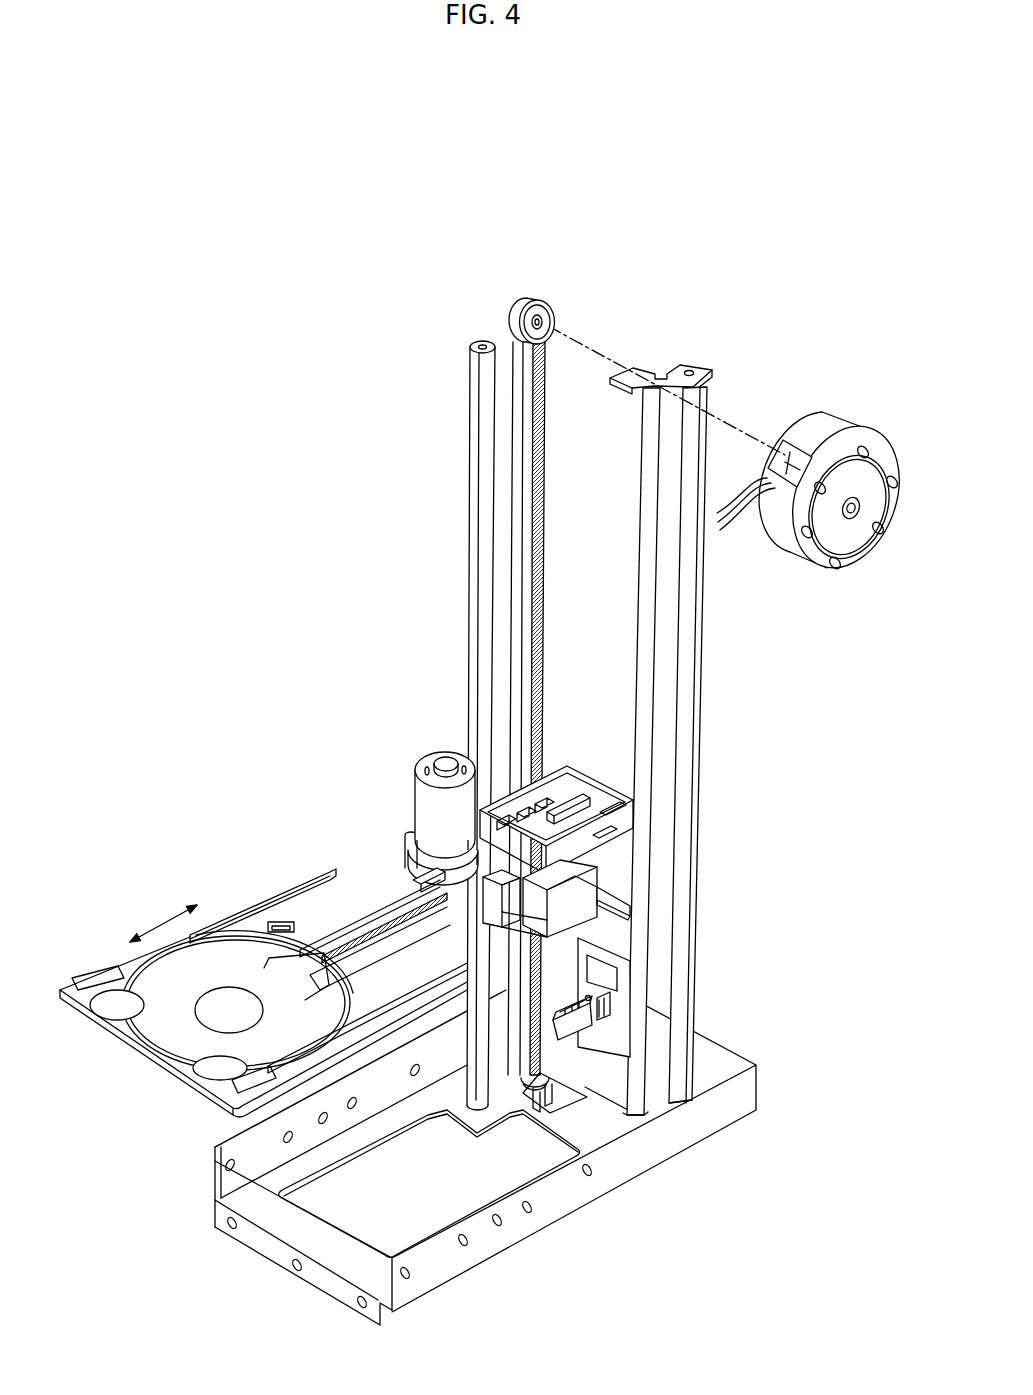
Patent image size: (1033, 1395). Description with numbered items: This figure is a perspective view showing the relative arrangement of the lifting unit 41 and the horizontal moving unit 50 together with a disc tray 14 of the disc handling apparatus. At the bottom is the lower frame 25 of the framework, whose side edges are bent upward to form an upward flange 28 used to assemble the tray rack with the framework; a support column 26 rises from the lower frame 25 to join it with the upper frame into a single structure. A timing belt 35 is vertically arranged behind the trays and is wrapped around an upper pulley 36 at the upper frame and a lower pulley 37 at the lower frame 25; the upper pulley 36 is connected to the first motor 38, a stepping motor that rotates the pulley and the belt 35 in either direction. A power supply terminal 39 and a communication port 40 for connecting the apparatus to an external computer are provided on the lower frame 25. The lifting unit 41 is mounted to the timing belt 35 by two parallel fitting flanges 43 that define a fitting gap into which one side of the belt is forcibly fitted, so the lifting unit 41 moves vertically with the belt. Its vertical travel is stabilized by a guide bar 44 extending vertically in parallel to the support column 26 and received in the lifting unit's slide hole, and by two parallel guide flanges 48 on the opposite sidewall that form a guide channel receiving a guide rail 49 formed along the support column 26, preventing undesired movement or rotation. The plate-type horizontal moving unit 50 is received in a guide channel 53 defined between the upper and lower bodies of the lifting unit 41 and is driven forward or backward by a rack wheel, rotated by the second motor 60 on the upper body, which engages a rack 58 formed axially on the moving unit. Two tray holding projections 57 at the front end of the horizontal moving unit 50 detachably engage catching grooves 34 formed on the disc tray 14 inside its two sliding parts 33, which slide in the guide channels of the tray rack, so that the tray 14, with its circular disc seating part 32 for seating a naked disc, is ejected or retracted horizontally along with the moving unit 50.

The disc tray 14 is at (143, 1060).
The lower frame 25 is at (352, 1278).
The support column 26 is at (690, 663).
The upward flange 28 is at (430, 1277).
The circular disc seating part 32 is at (153, 977).
The sliding part 33 is at (302, 882).
The catching groove 34 is at (280, 930).
The timing belt 35 is at (537, 442).
The upper pulley 36 is at (518, 303).
The lower pulley 37 is at (583, 1097).
The first motor 38 is at (817, 432).
The power supply terminal 39 is at (613, 997).
The communication port 40 is at (627, 1030).
The lifting unit 41 is at (577, 775).
The fitting flange 43 is at (507, 783).
The guide bar 44 is at (477, 413).
The guide flange 48 is at (633, 843).
The guide rail 49 is at (641, 646).
The horizontal moving unit 50 is at (368, 893).
The guide channel 53 is at (420, 878).
The tray holding projection 57 is at (283, 927).
The rack 58 is at (370, 923).
The second motor 60 is at (423, 807).